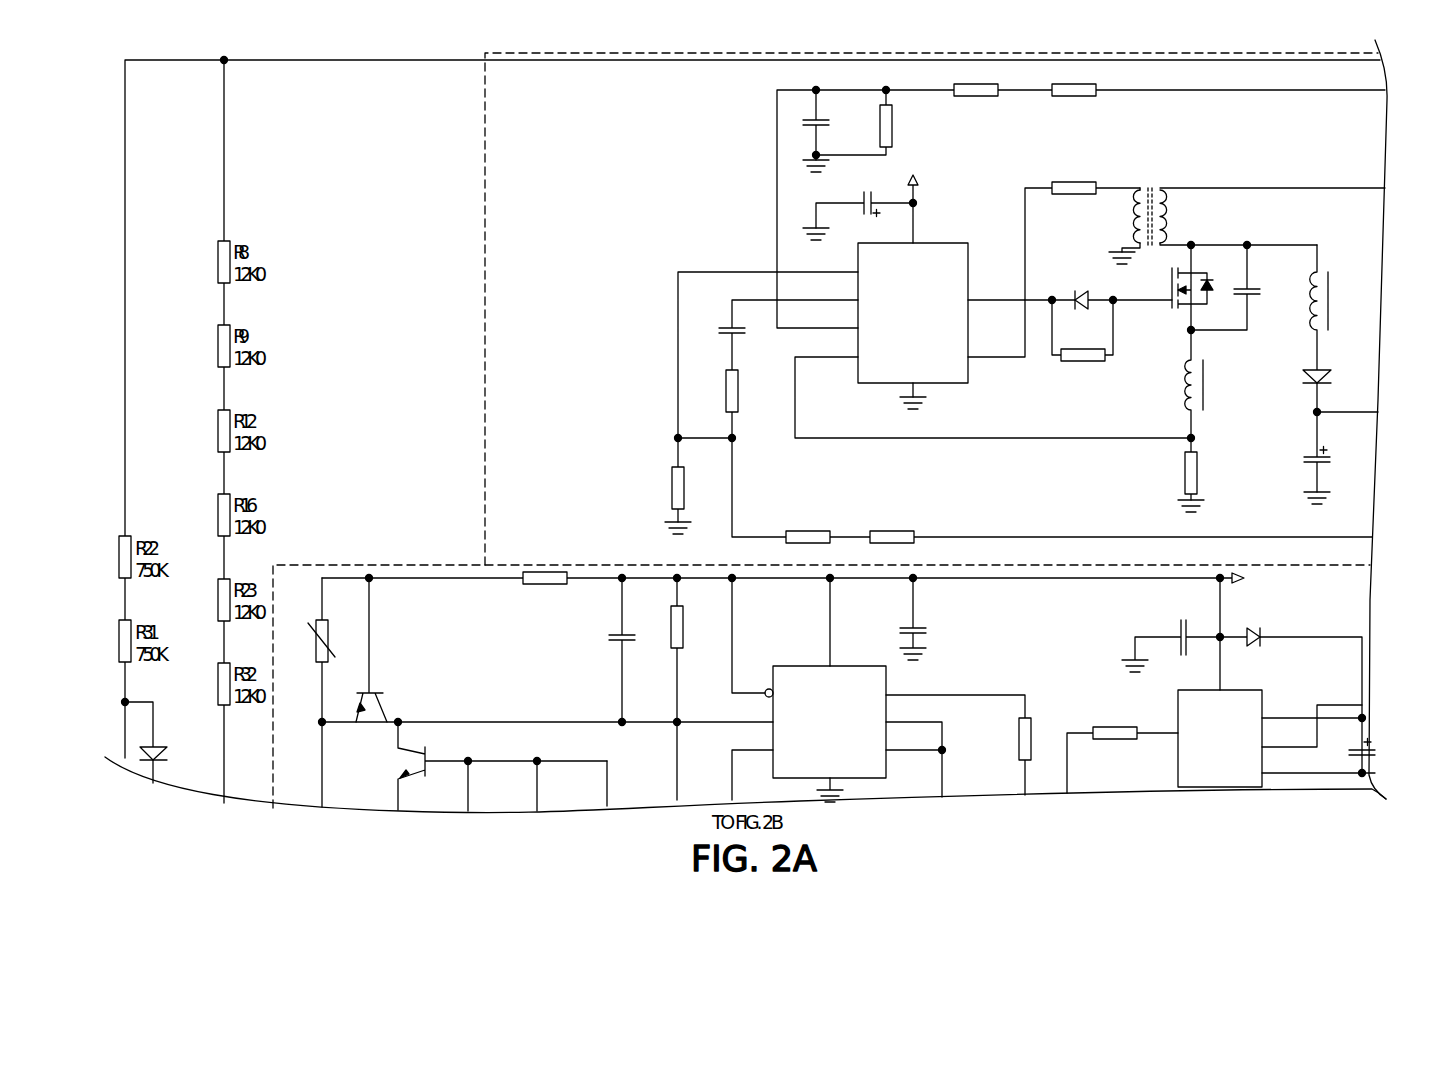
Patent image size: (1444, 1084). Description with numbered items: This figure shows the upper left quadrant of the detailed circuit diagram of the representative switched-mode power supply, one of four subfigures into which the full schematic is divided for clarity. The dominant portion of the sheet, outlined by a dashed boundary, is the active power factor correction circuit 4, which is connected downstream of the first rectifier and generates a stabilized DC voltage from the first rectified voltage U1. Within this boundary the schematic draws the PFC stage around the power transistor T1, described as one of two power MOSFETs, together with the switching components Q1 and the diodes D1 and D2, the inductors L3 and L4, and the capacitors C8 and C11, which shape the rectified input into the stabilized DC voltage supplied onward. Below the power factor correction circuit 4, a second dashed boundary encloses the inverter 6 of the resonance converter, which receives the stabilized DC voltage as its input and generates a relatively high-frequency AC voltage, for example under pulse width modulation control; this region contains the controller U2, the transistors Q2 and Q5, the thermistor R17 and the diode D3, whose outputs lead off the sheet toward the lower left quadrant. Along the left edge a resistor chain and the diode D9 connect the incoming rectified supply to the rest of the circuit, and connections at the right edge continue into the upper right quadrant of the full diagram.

The active power factor correction circuit 4 is at (495, 341).
The inverter 6 is at (422, 565).
The first rectified voltage U1 is at (914, 292).
The timer NE555 U2 is at (829, 698).
The power transistor T1 is at (1246, 191).
The power MOSFET Q1 is at (1165, 295).
The PNP transistor Q2 is at (402, 650).
The NPN transistor Q5 is at (468, 766).
The diode D1 is at (1098, 275).
The diode D2 is at (1338, 387).
The diode D3 is at (1291, 686).
The diode D9 is at (171, 742).
The inductor L3 is at (1341, 307).
The inductor L4 is at (1224, 384).
The capacitor C8 is at (1242, 293).
The capacitor C11 is at (1341, 460).
The PTC thermistor R17 is at (321, 643).